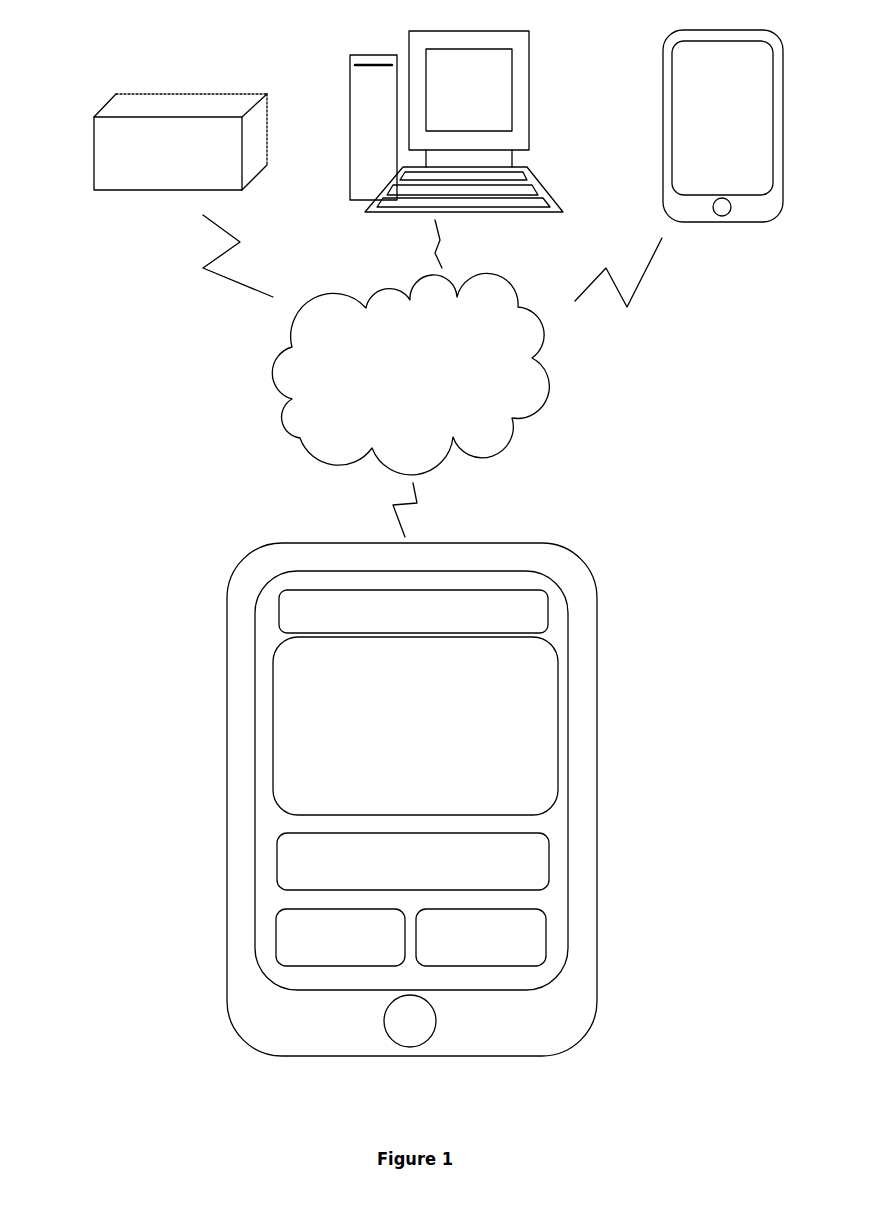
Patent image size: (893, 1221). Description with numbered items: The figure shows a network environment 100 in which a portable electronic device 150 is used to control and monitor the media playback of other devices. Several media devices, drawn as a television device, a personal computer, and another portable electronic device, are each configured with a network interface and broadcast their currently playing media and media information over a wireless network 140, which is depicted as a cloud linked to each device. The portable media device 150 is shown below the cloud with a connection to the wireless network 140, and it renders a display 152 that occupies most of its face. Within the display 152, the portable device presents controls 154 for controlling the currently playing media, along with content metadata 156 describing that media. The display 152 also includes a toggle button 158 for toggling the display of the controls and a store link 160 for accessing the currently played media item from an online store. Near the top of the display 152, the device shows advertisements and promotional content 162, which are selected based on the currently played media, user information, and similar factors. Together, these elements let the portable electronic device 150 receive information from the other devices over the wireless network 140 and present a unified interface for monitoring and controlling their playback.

The network environment 100 is at (82, 68).
The wireless network 140 is at (410, 374).
The portable electronic device 150 is at (599, 602).
The display 152 is at (570, 745).
The controls 154 is at (288, 705).
The content metadata 156 is at (527, 865).
The toggle button 158 is at (288, 935).
The store link 160 is at (527, 939).
The promotional content 162 is at (293, 611).